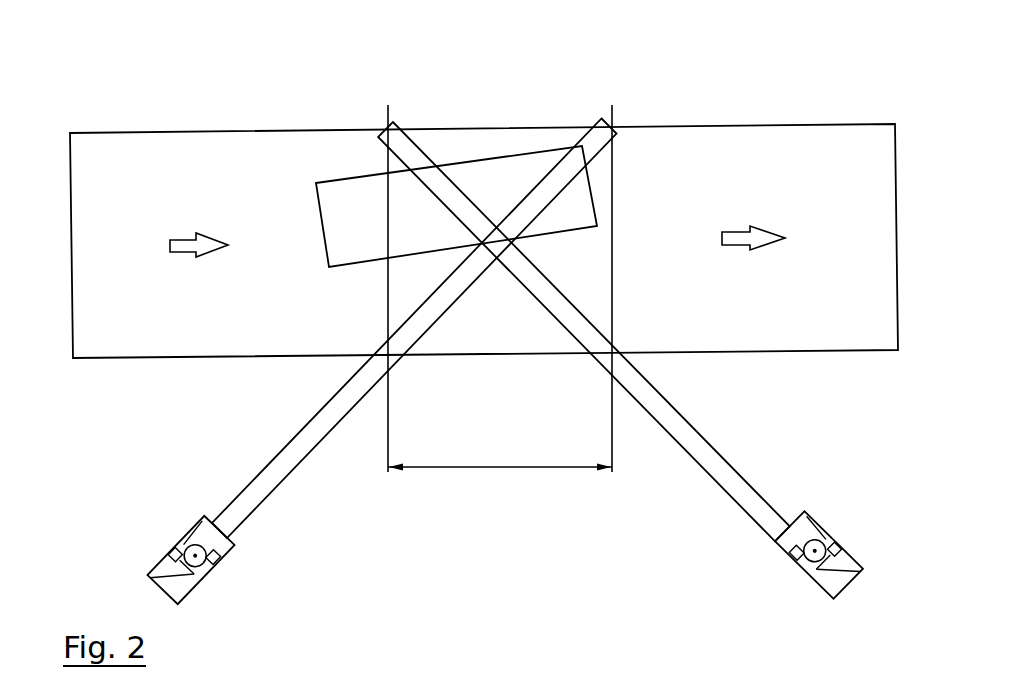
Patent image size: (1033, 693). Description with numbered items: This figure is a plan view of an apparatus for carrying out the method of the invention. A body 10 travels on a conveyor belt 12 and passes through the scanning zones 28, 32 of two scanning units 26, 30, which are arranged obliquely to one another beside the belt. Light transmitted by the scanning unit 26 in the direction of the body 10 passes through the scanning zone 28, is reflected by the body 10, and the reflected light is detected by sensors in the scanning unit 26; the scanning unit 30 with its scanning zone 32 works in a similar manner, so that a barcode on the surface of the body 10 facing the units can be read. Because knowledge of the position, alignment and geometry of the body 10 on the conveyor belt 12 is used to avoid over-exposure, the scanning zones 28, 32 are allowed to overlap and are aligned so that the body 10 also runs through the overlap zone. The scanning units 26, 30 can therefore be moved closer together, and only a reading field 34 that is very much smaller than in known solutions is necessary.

The body 10 is at (487, 178).
The conveyor belt 12 is at (763, 150).
The scanning unit 26 is at (218, 542).
The scanning zone 28 is at (407, 320).
The scanning unit 30 is at (808, 512).
The scanning zone 32 is at (590, 330).
The reading field 34 is at (477, 467).